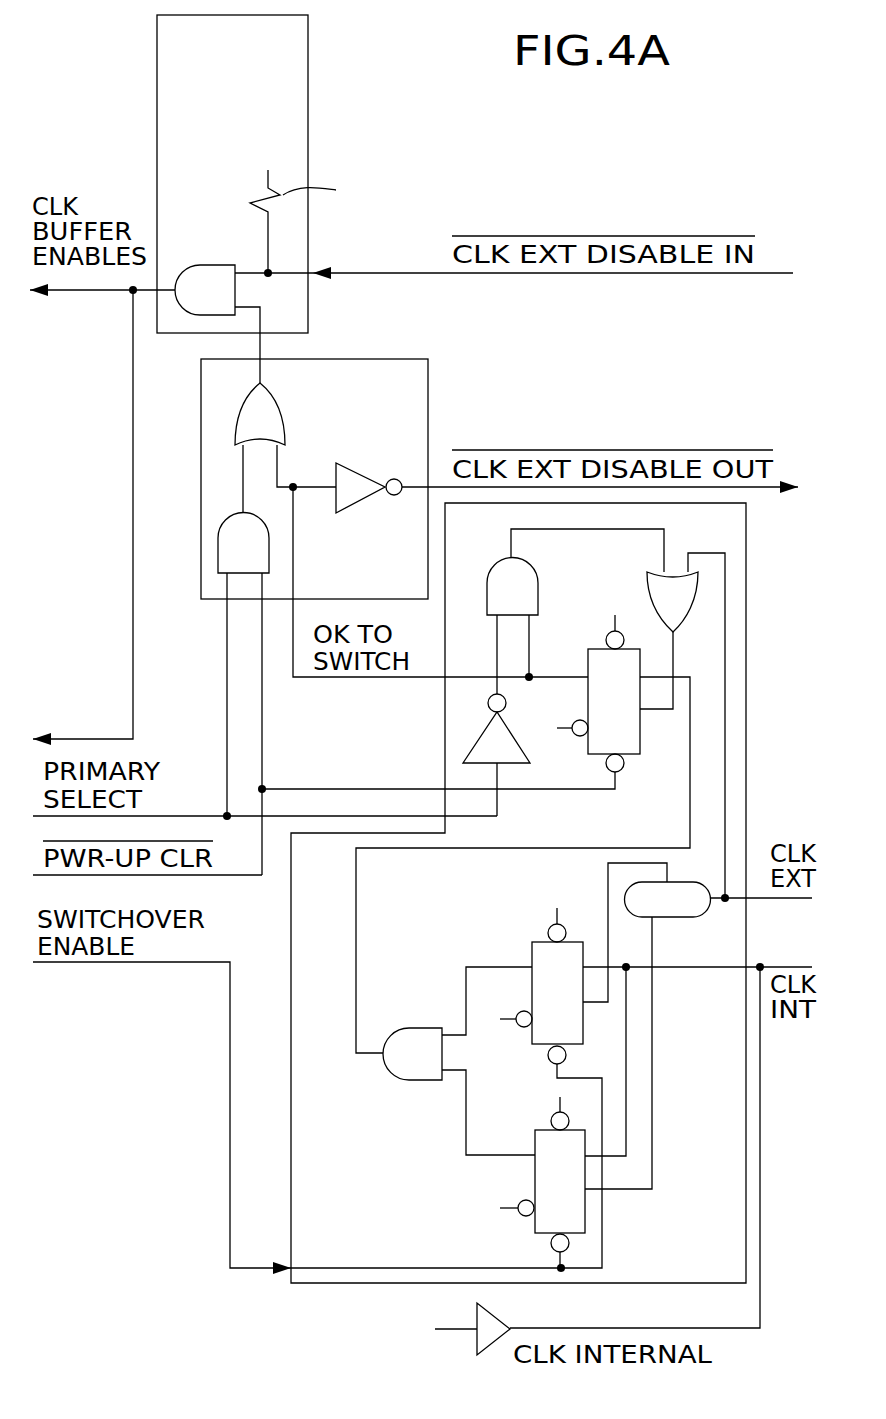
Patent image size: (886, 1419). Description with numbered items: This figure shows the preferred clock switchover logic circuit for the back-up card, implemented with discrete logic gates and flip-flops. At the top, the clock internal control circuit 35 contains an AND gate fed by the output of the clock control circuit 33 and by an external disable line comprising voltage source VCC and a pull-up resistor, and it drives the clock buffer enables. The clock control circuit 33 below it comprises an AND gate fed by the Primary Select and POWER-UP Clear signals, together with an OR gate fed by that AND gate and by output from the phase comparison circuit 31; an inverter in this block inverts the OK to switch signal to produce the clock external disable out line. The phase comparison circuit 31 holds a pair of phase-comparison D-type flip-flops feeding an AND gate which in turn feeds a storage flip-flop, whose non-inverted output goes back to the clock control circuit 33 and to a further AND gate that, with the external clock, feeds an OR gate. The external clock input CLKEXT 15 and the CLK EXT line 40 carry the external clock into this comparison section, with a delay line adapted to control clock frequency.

The clock internal control circuit 35 is at (308, 90).
The clock control circuit 33 is at (428, 380).
The phase comparison circuit 31 is at (551, 928).
The external clock signal CLKEXT 15 is at (532, 914).
The CLK EXT signal line 40 is at (618, 1082).